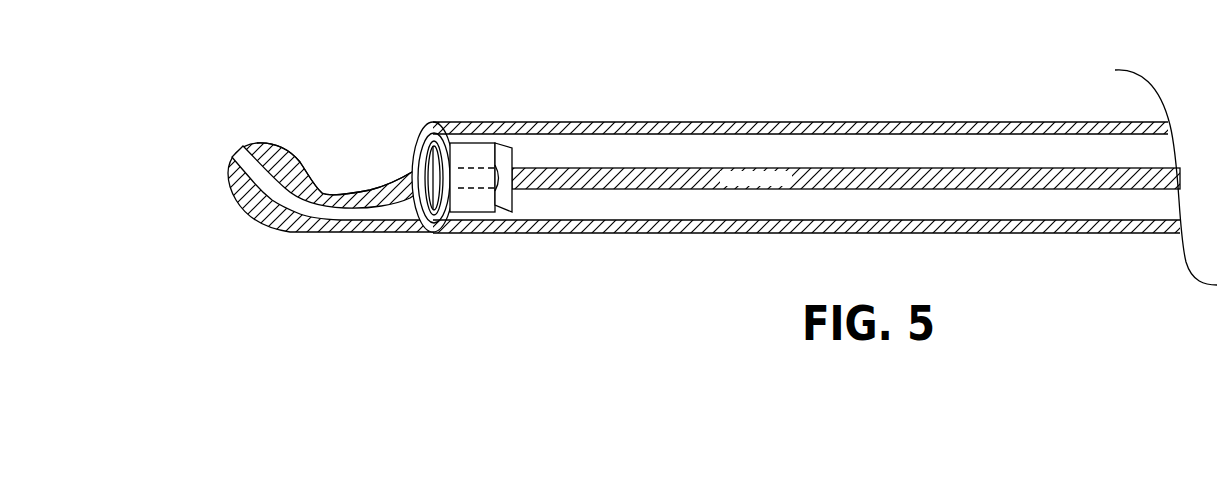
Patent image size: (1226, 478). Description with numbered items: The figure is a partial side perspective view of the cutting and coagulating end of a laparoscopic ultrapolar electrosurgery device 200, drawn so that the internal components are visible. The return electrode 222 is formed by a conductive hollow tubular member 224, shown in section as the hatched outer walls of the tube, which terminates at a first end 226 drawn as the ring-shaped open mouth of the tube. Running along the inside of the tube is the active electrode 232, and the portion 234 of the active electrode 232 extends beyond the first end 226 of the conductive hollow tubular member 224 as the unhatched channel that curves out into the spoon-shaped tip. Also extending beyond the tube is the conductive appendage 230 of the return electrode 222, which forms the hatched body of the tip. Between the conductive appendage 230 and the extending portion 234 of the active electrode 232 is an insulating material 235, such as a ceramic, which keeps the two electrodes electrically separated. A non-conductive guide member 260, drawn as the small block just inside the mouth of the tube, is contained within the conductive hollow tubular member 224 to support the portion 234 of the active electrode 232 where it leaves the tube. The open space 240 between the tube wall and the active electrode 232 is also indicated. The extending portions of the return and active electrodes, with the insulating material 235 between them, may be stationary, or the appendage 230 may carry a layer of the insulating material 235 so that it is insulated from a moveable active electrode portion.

The laparoscopic ultrapolar electrosurgery device 200 is at (636, 63).
The return electrode 222 is at (648, 240).
The conductive hollow tubular member 224 is at (707, 122).
The first end 226 is at (410, 233).
The conductive appendage 230 is at (233, 203).
The active electrode 232 is at (1005, 178).
The portion of the active electrode 234 is at (283, 150).
The insulating material 235 is at (243, 150).
The lumen 240 is at (867, 150).
The non-conductive guide member 260 is at (468, 150).